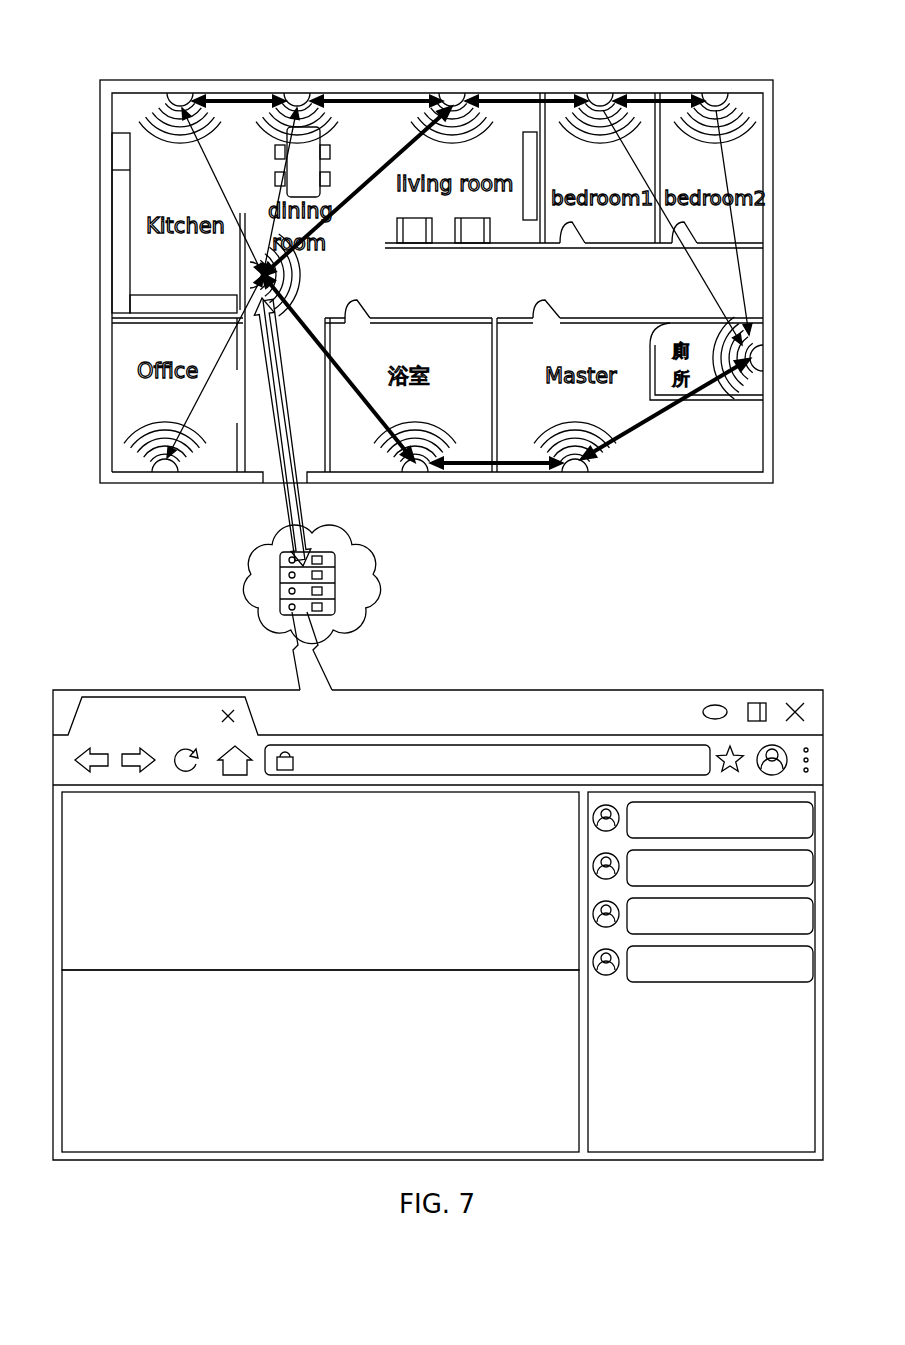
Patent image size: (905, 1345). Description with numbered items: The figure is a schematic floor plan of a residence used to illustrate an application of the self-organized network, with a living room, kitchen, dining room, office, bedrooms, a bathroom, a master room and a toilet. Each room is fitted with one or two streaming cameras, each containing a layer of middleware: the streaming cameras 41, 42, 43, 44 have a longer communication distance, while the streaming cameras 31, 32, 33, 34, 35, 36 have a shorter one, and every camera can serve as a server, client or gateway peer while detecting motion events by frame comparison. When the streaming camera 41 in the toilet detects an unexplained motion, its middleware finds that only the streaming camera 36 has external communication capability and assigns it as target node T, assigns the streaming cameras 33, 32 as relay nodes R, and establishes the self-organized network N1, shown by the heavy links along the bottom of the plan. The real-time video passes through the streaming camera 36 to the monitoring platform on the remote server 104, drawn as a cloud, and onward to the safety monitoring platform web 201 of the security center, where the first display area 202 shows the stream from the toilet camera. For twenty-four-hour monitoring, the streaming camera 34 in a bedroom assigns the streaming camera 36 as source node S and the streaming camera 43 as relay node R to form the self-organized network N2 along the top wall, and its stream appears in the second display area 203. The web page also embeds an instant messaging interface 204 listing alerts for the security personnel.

The streaming camera 31 is at (165, 468).
The streaming camera 32 is at (415, 483).
The streaming camera 33 is at (575, 483).
The streaming camera 34 is at (600, 82).
The streaming camera 35 is at (297, 98).
The streaming camera 36 is at (241, 275).
The streaming camera 41 is at (773, 358).
The streaming camera 42 is at (715, 98).
The streaming camera 43 is at (452, 82).
The streaming camera 44 is at (180, 98).
The remote server 104 is at (311, 584).
The safety monitoring platform web 201 is at (438, 910).
The first display area 202 is at (320, 881).
The second display area 203 is at (320, 1061).
The instant messaging interface 204 is at (701, 972).
The self-organized network N1 is at (482, 480).
The self-organized network N2 is at (512, 88).